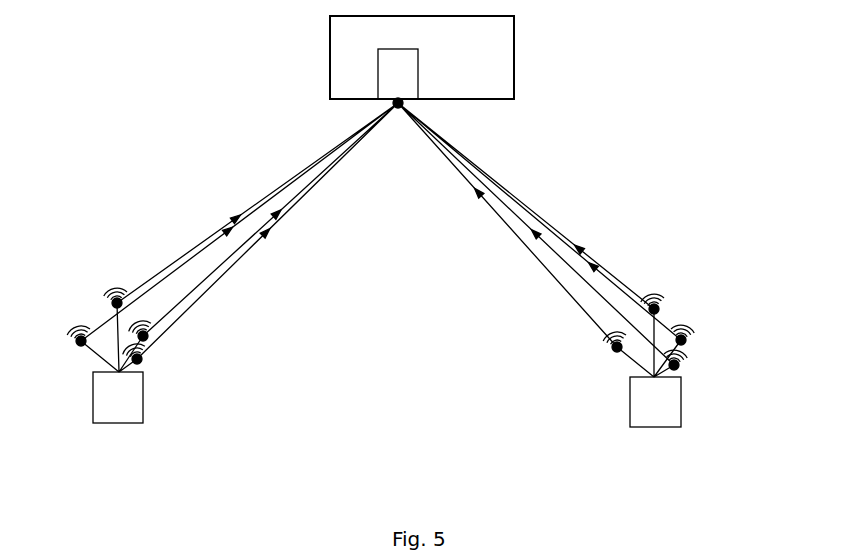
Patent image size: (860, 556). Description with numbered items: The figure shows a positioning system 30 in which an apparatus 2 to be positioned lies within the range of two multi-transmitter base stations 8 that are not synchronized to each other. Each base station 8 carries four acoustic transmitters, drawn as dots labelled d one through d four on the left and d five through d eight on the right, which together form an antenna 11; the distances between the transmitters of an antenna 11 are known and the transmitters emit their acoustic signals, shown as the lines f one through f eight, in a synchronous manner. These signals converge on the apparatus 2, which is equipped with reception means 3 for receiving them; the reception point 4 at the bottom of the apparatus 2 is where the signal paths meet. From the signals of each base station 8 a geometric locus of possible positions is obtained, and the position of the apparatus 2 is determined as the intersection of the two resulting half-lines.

The apparatus to be positioned 2 is at (514, 57).
The reception means 3 is at (416, 50).
The light emitting point 4 is at (400, 98).
The base station 8 is at (95, 415).
The antenna 11 is at (82, 303).
The positioning system 30 is at (211, 134).